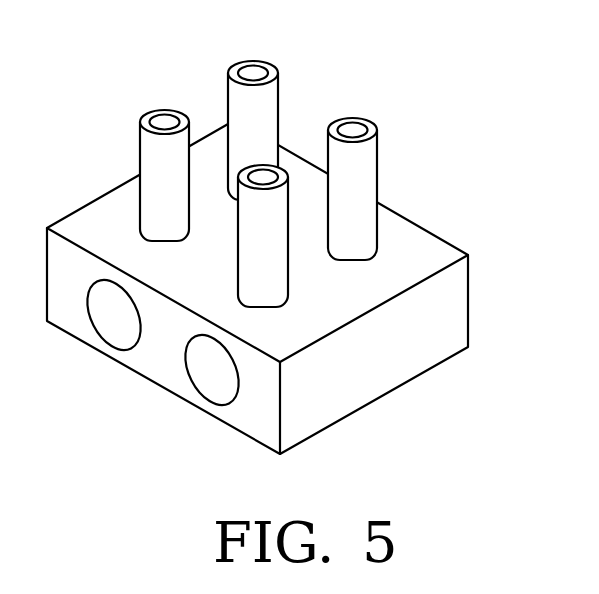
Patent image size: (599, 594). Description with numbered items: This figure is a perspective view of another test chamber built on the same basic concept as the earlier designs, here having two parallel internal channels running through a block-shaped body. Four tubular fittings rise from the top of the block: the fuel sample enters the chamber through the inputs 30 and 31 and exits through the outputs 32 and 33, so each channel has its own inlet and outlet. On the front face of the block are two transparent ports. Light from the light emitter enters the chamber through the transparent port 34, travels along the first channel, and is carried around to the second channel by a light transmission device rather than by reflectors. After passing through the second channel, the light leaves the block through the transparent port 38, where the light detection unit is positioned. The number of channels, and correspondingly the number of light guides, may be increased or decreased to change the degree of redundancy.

The input 30 is at (258, 105).
The input 31 is at (357, 167).
The output 32 is at (165, 158).
The output 33 is at (262, 260).
The transparent port 34 is at (120, 313).
The transparent port 38 is at (220, 368).